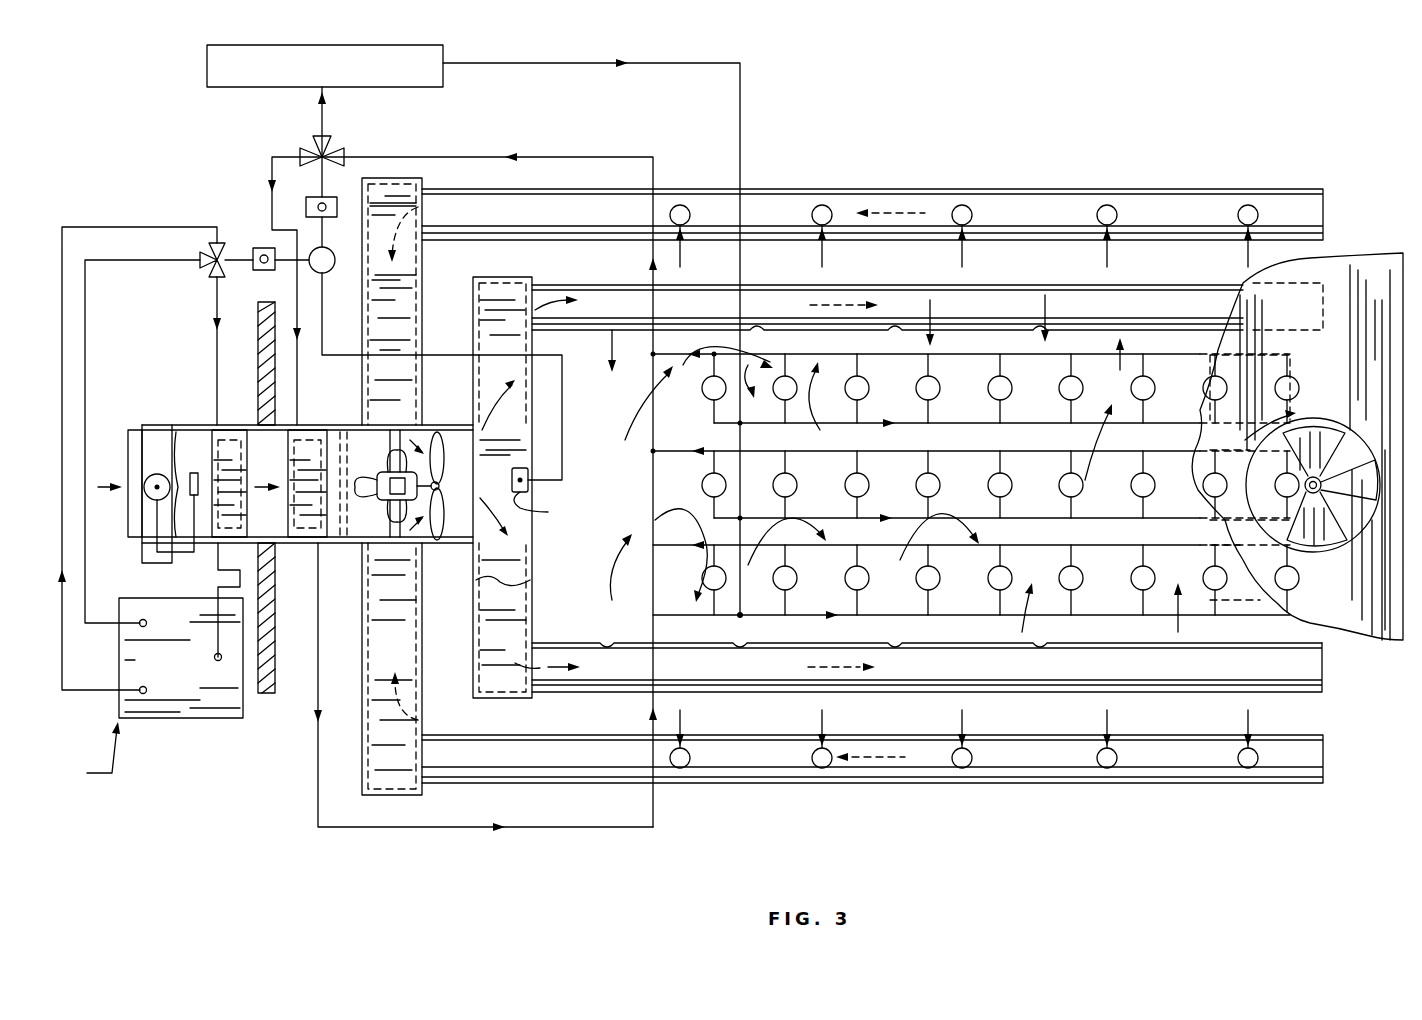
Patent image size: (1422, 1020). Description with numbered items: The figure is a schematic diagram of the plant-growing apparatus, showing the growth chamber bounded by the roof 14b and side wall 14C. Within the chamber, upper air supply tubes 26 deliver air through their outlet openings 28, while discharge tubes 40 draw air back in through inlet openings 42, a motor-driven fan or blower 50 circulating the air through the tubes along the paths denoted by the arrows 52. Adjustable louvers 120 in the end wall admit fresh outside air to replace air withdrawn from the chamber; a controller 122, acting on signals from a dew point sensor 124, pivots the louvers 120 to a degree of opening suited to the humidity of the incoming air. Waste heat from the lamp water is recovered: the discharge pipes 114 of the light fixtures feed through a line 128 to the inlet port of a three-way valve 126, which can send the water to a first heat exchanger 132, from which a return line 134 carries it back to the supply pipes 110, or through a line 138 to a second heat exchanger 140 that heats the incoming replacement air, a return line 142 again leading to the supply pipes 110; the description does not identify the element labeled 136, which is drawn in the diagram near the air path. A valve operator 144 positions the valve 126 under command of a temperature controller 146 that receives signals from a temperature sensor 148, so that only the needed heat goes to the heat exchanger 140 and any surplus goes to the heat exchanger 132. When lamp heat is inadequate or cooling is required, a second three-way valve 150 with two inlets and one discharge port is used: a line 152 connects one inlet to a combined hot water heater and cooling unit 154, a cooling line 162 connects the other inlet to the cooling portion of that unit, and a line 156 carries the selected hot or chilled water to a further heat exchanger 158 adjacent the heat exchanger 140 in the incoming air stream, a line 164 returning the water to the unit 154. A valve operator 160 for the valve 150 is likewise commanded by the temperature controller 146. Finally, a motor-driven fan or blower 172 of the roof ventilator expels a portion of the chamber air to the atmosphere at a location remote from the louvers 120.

The roof 14b is at (1382, 645).
The side wall 14C is at (275, 664).
The upper air supply tube 26 is at (1068, 285).
The outlet opening 28 is at (1044, 326).
The discharge tube 40 is at (1052, 189).
The inlet opening 42 is at (826, 205).
The motor-driven fan or blower 50 is at (382, 470).
The arrows 52 is at (1110, 258).
The supply pipe 110 is at (930, 405).
The discharge pipe 114 is at (872, 365).
The adjustable louvers 120 is at (135, 455).
The controller 122 is at (150, 492).
The dew point sensor 124 is at (193, 472).
The 3-way valve 126 is at (330, 152).
The line 128 is at (575, 157).
The first heat exchanger 132 is at (207, 64).
The return line 134 is at (740, 140).
The vertical duct 136 is at (476, 432).
The line 138 is at (270, 160).
The second heat exchanger 140 is at (305, 440).
The return line 142 is at (318, 820).
The valve operator 144 is at (306, 207).
The temperature controller 146 is at (330, 272).
The temperature sensor 148 is at (549, 497).
The second 3-way valve 150 is at (205, 262).
The line 152 is at (85, 322).
The combined hot water heater and cooling unit 154 is at (170, 690).
The line 156 is at (217, 358).
The heat exchanger 158 is at (222, 540).
The valve operator 160 is at (258, 248).
The cooling line 162 is at (97, 691).
The line 164 is at (240, 585).
The motor-driven fan or blower 172 is at (1320, 440).